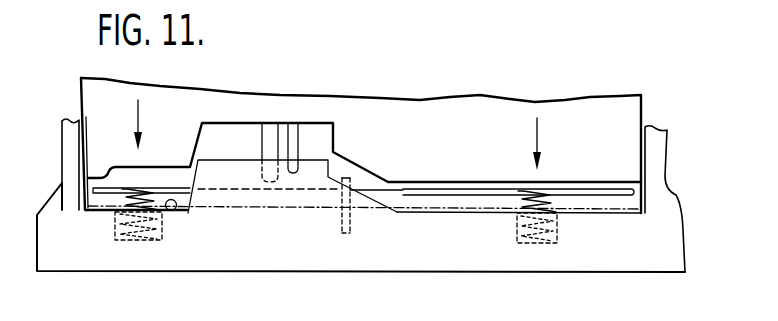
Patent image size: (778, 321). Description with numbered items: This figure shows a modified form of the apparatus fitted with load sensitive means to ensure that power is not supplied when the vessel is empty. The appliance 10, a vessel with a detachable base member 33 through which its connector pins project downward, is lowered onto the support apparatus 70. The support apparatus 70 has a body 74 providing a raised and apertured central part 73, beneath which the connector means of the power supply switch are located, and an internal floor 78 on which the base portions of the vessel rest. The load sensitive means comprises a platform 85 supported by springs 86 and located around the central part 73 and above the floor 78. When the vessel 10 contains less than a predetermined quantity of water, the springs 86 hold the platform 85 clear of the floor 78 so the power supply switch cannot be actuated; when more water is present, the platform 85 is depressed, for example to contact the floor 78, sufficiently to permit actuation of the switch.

The appliance 10 is at (100, 103).
The detachable base member 33 is at (455, 181).
The support apparatus 70 is at (656, 209).
The raised and apertured central part 73 is at (247, 175).
The body 74 is at (50, 236).
The internal floor 78 is at (178, 213).
The platform 85 is at (590, 193).
The springs 86 is at (132, 198).